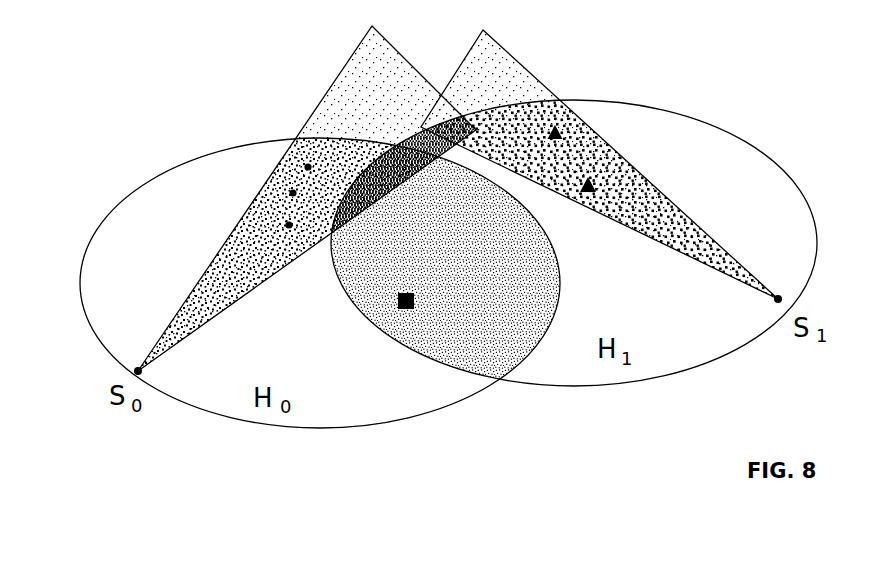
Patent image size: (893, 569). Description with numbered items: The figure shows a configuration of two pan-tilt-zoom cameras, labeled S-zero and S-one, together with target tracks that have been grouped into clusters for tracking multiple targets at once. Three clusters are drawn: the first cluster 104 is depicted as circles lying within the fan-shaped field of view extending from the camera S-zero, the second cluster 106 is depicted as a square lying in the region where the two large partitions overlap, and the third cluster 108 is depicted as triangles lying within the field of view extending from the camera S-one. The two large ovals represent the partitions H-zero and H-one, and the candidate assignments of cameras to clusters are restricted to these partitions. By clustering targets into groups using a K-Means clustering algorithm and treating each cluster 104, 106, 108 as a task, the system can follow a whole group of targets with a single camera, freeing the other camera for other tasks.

The cluster 104 is at (288, 223).
The cluster 106 is at (414, 306).
The cluster 108 is at (588, 183).